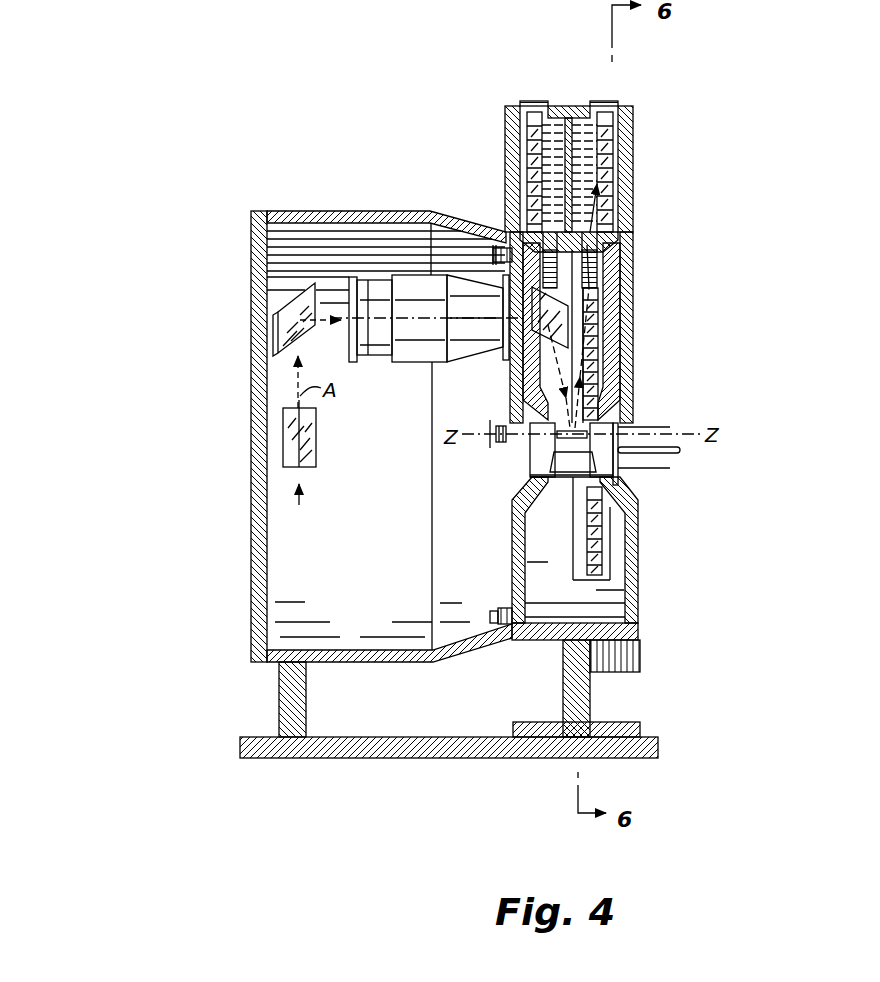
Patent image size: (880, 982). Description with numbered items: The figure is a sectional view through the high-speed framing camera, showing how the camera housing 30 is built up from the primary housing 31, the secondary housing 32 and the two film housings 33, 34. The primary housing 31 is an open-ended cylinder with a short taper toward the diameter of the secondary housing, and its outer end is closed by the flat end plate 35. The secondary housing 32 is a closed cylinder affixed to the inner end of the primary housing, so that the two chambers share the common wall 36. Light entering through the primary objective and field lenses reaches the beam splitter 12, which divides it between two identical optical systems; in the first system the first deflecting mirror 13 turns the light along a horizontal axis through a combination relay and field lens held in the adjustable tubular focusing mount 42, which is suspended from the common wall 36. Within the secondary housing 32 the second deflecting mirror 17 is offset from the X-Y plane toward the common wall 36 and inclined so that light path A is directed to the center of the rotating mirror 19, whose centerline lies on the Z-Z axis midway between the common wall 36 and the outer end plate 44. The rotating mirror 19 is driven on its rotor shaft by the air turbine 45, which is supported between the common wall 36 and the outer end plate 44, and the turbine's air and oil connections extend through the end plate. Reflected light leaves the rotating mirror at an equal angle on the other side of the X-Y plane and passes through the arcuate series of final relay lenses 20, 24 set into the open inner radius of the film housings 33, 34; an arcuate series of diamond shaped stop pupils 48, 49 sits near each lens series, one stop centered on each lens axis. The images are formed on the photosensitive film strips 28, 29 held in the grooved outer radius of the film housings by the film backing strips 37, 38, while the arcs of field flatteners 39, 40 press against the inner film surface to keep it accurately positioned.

The beam splitter 12 is at (291, 450).
The first deflecting mirror 13 is at (278, 322).
The second deflecting mirror 17 is at (552, 328).
The rotating mirror 19 is at (557, 437).
The arcuate series of final relay lenses 20 is at (599, 312).
The arcuate series of final relay lenses 24 is at (558, 278).
The photosensitive film strip 28 is at (609, 104).
The photosensitive film strip 29 is at (531, 103).
The camera housing 30 is at (428, 468).
The primary housing 31 is at (378, 209).
The secondary housing 32 is at (637, 365).
The film housing 33 is at (636, 167).
The film housing 34 is at (503, 157).
The flat end plate 35 is at (264, 507).
The common wall 36 is at (521, 518).
The film backing strip 37 is at (639, 143).
The film backing strip 38 is at (500, 141).
The field flattener 39 is at (608, 145).
The field flattener 40 is at (529, 141).
The adjustable tubular focusing mount 42 is at (428, 344).
The outer end plate 44 is at (636, 544).
The air turbine 45 is at (604, 462).
The arcuate series of diamond shaped stop pupils 48 is at (587, 232).
The arcuate series of diamond shaped stop pupils 49 is at (557, 232).